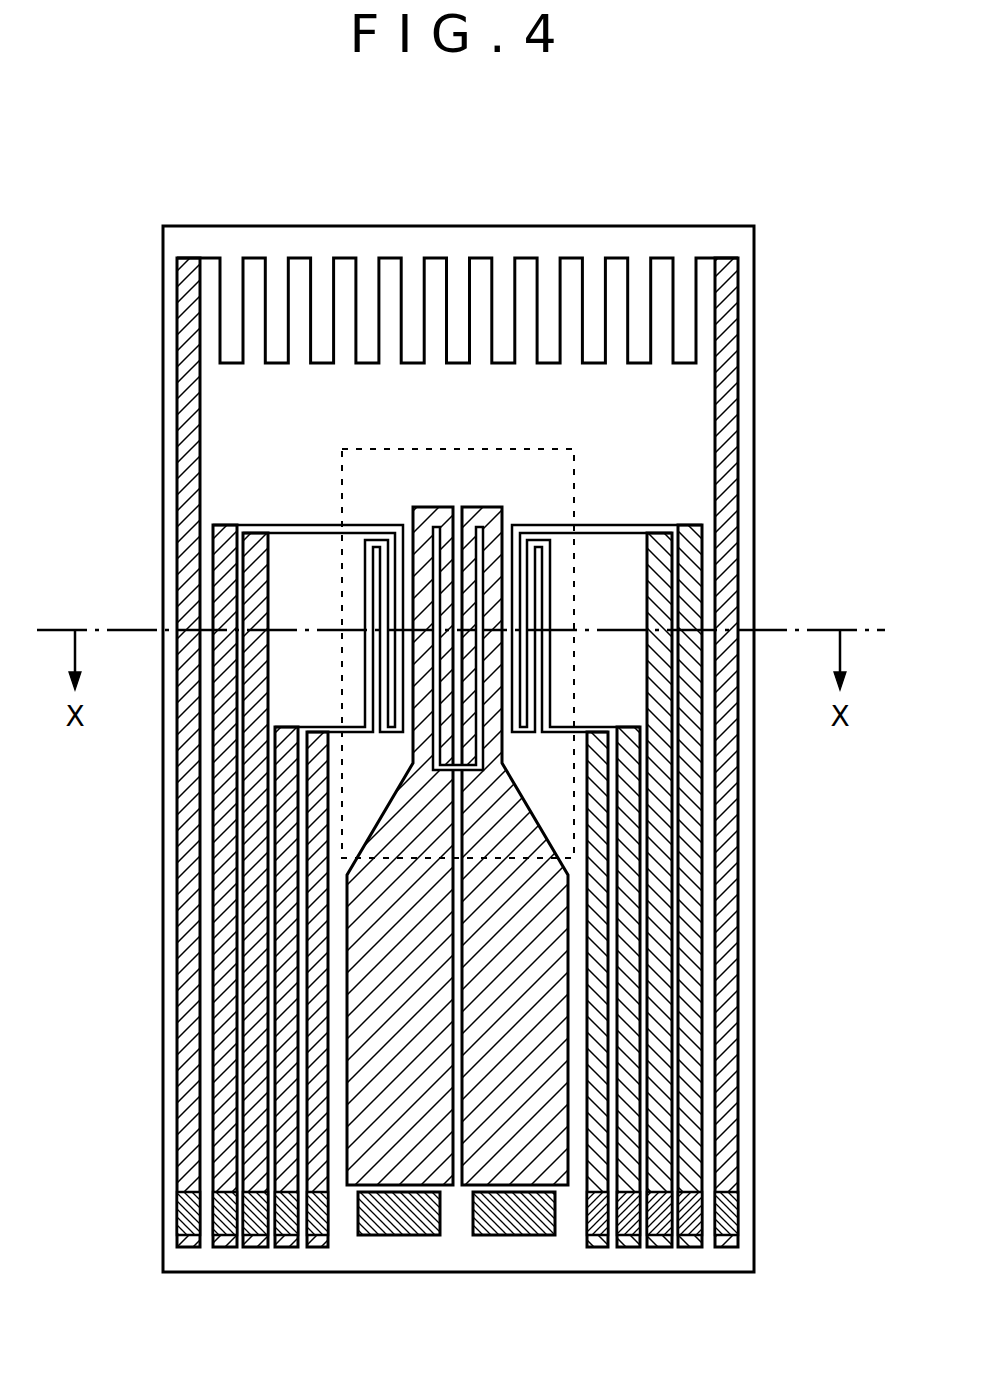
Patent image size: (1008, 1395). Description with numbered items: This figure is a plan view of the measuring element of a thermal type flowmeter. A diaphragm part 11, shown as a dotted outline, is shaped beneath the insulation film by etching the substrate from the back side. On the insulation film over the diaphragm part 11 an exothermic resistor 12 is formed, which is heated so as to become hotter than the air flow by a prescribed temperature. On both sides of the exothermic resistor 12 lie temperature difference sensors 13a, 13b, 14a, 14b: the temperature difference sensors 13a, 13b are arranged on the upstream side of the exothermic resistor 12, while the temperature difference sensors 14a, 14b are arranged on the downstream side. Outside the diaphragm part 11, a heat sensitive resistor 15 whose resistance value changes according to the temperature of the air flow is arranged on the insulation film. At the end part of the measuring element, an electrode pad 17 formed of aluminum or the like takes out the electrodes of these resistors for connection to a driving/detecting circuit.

The diaphragm part 11 is at (342, 449).
The exothermic resistor 12 is at (472, 515).
The temperature difference sensor 13a is at (373, 577).
The temperature difference sensor 13b is at (386, 610).
The temperature difference sensor 14a is at (520, 572).
The temperature difference sensor 14b is at (531, 607).
The heat sensitive resistor 15 is at (470, 306).
The electrode pad 17 is at (388, 1226).